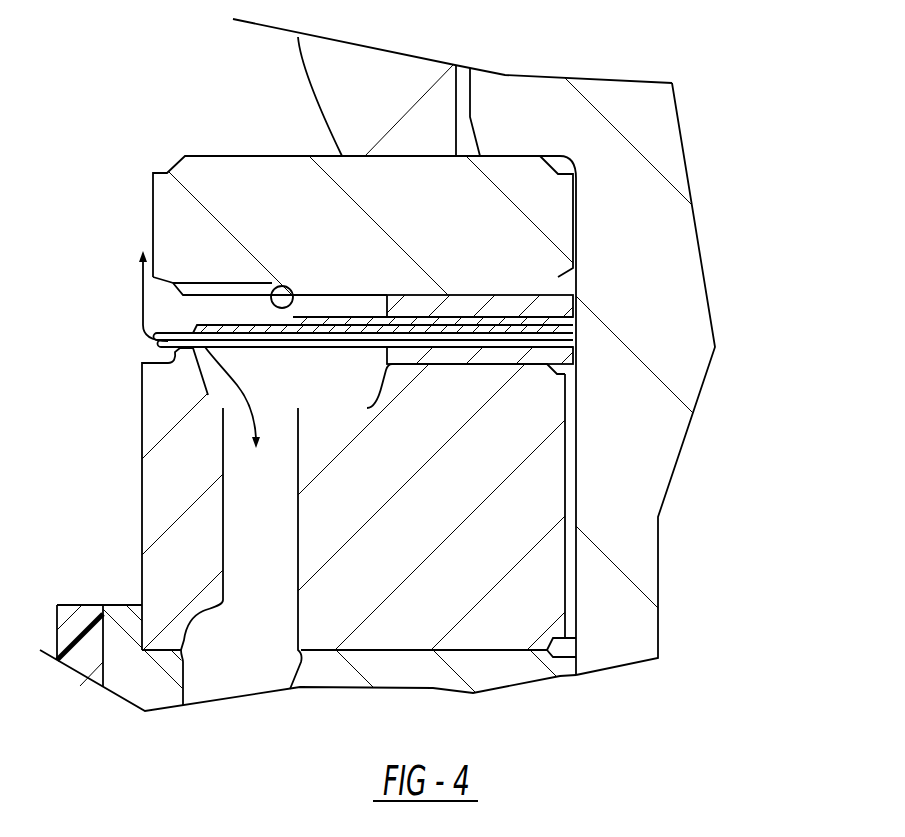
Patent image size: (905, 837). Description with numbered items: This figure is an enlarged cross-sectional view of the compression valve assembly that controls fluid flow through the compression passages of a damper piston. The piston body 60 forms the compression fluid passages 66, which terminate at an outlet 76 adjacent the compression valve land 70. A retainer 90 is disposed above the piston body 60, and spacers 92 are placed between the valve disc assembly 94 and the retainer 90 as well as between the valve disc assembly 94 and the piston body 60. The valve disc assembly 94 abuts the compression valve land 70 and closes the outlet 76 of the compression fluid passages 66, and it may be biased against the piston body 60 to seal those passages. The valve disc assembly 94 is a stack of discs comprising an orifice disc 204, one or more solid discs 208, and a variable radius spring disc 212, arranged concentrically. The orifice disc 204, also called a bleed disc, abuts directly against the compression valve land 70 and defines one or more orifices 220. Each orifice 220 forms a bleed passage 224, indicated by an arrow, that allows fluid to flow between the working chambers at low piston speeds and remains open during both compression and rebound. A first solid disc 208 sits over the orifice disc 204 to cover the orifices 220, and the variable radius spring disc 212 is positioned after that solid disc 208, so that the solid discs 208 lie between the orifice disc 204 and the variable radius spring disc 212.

The piston body 60 is at (142, 520).
The compression fluid passages 66 is at (257, 551).
The compression valve land 70 is at (173, 352).
The outlet 76 is at (350, 395).
The retainer 90 is at (218, 173).
The spacers 92 is at (472, 298).
The valve disc assembly 94 is at (223, 310).
The orifice disc 204 is at (575, 342).
The solid discs 208 is at (172, 334).
The variable radius spring disc 212 is at (247, 340).
The orifices 220 is at (216, 345).
The bleed passage 224 is at (250, 395).